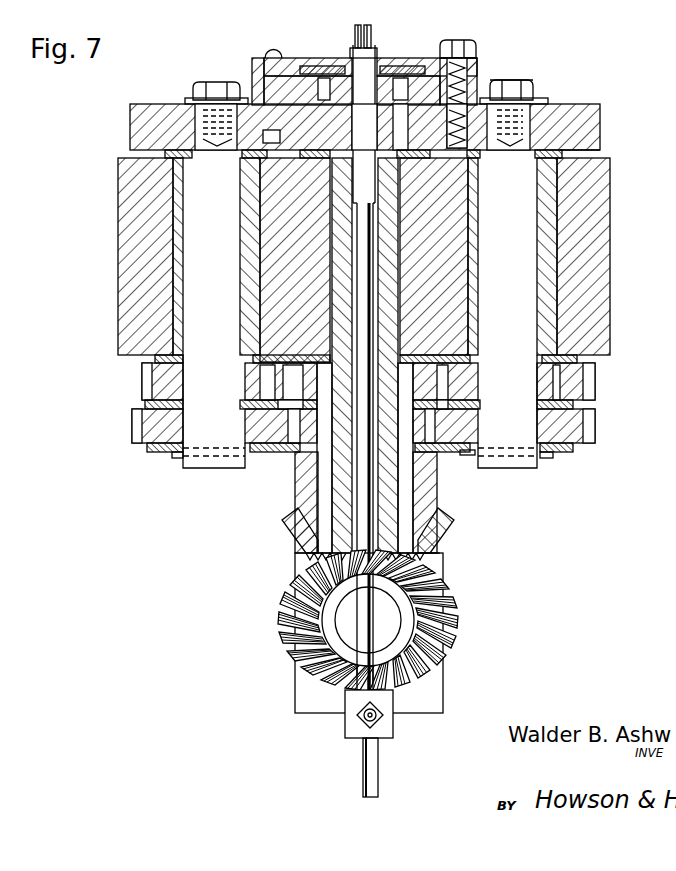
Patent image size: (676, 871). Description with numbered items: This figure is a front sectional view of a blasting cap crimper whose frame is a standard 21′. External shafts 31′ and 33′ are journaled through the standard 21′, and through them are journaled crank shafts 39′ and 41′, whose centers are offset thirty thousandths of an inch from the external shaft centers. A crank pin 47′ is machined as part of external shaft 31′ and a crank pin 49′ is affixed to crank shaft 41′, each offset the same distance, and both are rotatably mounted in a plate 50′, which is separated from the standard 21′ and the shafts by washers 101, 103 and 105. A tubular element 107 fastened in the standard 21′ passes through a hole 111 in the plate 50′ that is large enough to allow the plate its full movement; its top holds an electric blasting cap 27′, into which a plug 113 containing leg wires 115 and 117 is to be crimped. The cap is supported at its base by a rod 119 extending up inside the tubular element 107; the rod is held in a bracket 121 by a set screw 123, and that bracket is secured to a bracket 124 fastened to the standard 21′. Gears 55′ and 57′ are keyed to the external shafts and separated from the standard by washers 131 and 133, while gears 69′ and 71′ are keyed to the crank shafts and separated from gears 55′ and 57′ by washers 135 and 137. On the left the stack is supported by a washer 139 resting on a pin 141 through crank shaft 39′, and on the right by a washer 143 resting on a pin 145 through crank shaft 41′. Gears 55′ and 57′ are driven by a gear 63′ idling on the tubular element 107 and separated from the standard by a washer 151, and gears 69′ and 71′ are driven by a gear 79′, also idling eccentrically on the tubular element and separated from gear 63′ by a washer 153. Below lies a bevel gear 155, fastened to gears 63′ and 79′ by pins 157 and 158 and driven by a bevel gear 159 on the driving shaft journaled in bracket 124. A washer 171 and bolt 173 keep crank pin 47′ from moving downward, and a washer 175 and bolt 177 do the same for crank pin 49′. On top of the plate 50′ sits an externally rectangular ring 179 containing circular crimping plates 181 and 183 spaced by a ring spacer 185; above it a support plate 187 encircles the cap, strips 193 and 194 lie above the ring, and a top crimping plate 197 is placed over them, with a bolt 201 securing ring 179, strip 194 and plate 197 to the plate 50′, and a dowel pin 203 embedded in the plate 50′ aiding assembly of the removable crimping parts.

The standard 21′ is at (612, 207).
The electric blasting cap 27′ is at (368, 62).
The external shaft 31′ is at (170, 264).
The external shaft 33′ is at (550, 297).
The crank shaft 39′ is at (190, 208).
The crank shaft 41′ is at (520, 267).
The crank pin 47′ is at (130, 127).
The crank pin 49′ is at (600, 128).
The plate 50′ is at (600, 145).
The gear 55′ is at (145, 379).
The gear 57′ is at (595, 381).
The gear 63′ is at (291, 380).
The gear 69′ is at (135, 428).
The gear 71′ is at (595, 424).
The gear 79′ is at (312, 428).
The washer 101 is at (165, 154).
The washer 103 is at (295, 260).
The washer 105 is at (563, 154).
The tubular element 107 is at (342, 505).
The hole 111 is at (402, 124).
The plug 113 is at (352, 55).
The leg wire 115 is at (356, 33).
The leg wire 117 is at (365, 27).
The rod 119 is at (363, 792).
The bracket 121 is at (346, 740).
The set screw 123 is at (362, 720).
The bracket 124 is at (295, 691).
The washer 131 is at (168, 361).
The washer 133 is at (560, 357).
The washer 135 is at (150, 404).
The washer 137 is at (575, 403).
The washer 139 is at (150, 448).
The pin 141 is at (180, 460).
The washer 143 is at (578, 447).
The pin 145 is at (553, 454).
The washer 151 is at (413, 365).
The washer 153 is at (440, 368).
The bevel gear 155 is at (448, 538).
The pin 157 is at (285, 525).
The pin 158 is at (440, 512).
The bevel gear 159 is at (455, 627).
The washer 171 is at (185, 101).
The bolt 173 is at (210, 83).
The washer 175 is at (548, 101).
The bolt 177 is at (535, 85).
The ring 179 is at (490, 78).
The crimping plate 181 is at (470, 80).
The crimping plate 183 is at (400, 74).
The ring spacer 185 is at (410, 78).
The support plate 187 is at (318, 68).
The strip 193 is at (250, 62).
The strip 194 is at (477, 65).
The top crimping plate 197 is at (288, 58).
The bolt 201 is at (466, 40).
The dowel pin 203 is at (267, 52).